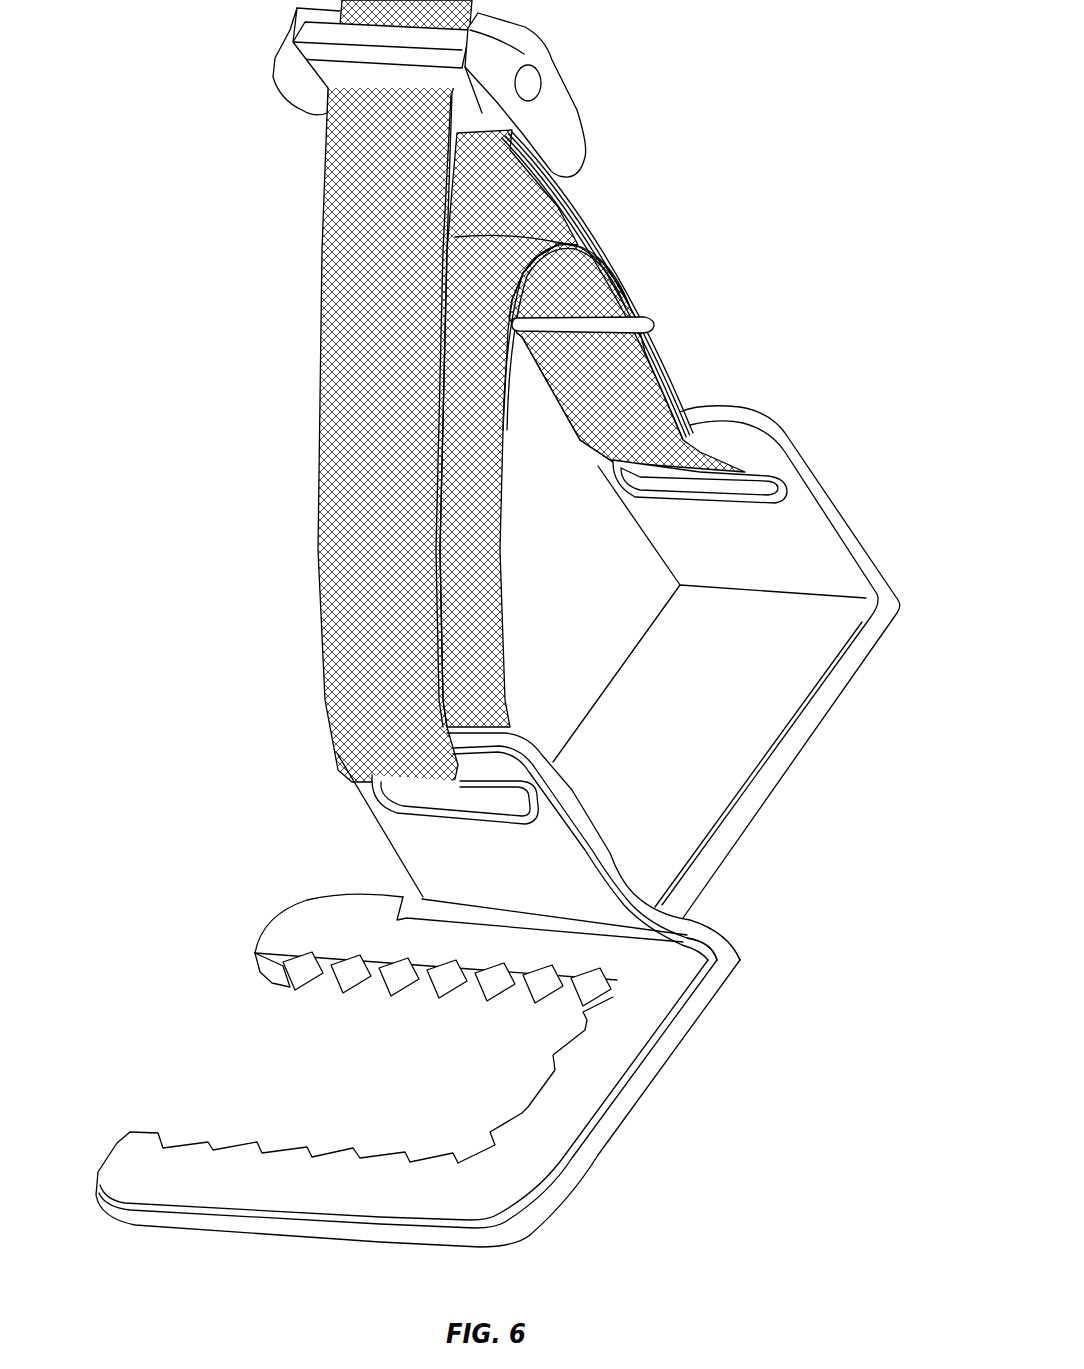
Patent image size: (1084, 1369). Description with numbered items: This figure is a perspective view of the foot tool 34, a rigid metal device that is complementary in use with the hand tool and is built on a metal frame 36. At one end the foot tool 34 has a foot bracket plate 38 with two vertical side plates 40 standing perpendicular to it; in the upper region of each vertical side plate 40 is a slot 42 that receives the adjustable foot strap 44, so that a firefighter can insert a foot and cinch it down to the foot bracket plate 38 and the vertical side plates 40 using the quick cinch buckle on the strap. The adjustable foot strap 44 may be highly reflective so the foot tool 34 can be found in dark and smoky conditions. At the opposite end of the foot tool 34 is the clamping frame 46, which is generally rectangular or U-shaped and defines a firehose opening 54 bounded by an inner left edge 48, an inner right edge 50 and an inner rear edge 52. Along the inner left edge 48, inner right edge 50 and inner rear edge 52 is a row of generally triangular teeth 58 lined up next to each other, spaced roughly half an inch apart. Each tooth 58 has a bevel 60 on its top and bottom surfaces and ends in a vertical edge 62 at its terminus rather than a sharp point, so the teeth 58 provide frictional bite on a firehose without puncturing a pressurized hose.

The foot tool 34 is at (248, 772).
The metal frame 36 is at (710, 938).
The foot bracket plate 38 is at (703, 758).
The vertical side plates 40 is at (810, 553).
The slots 42 is at (697, 470).
The adjustable foot strap 44 is at (355, 428).
The clamping frame 46 is at (513, 1157).
The inner left edge 48 is at (290, 1187).
The inner right edge 50 is at (397, 980).
The inner rear edge 52 is at (590, 1063).
The firehose opening 54 is at (222, 1045).
The teeth 58 is at (393, 945).
The bevel 60 is at (470, 973).
The vertical edge 62 is at (323, 985).